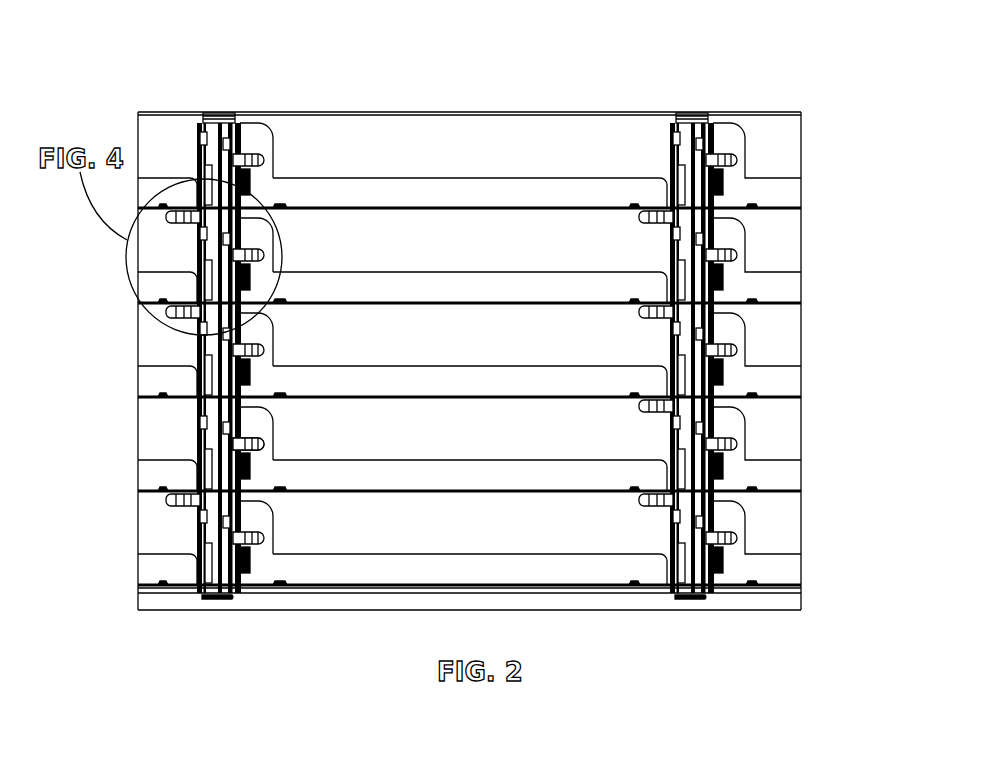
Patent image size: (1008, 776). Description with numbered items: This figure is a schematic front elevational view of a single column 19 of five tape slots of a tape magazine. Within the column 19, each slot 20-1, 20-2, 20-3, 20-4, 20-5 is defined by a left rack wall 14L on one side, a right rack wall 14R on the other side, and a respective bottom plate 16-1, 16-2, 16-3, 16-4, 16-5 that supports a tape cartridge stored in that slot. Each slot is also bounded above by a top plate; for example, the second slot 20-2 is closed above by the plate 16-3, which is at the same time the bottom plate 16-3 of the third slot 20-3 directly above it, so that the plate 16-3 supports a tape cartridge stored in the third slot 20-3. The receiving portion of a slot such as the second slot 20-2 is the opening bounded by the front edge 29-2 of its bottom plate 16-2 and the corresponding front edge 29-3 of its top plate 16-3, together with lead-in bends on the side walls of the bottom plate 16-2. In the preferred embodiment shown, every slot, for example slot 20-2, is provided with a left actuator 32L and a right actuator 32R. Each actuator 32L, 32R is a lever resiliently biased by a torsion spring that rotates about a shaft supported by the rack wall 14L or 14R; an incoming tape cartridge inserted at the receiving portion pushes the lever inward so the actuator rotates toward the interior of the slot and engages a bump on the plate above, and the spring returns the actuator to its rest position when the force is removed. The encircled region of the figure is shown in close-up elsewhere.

The single column 19 is at (358, 45).
The left rack wall 14L is at (218, 113).
The right rack wall 14R is at (691, 113).
The bottom plate 16-1 is at (423, 585).
The bottom plate 16-2 is at (423, 491).
The bottom plate 16-3 is at (423, 397).
The bottom plate 16-4 is at (423, 303).
The bottom plate 16-5 is at (423, 208).
The slot 20-1 is at (648, 530).
The slot 20-2 is at (648, 427).
The slot 20-3 is at (648, 340).
The slot 20-4 is at (648, 245).
The slot 20-5 is at (648, 160).
The front edge 29-2 is at (262, 486).
The front edge 29-3 is at (262, 392).
The left actuator 32L is at (232, 439).
The right actuator 32R is at (695, 404).